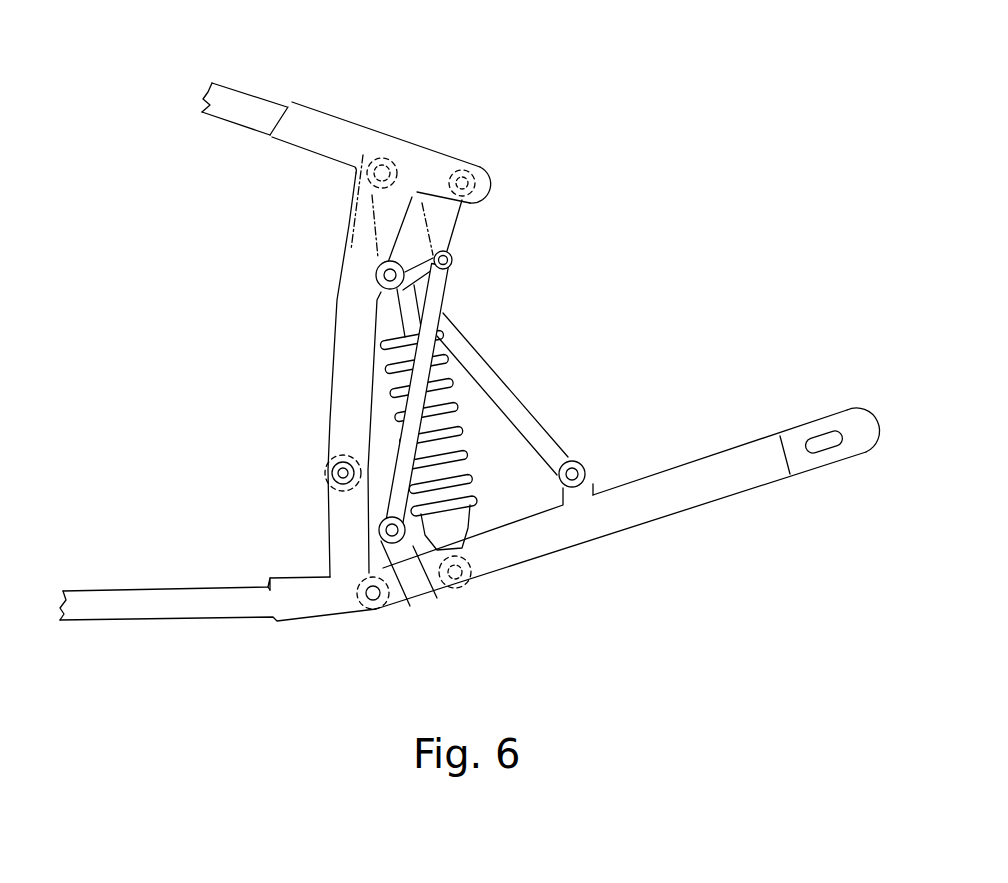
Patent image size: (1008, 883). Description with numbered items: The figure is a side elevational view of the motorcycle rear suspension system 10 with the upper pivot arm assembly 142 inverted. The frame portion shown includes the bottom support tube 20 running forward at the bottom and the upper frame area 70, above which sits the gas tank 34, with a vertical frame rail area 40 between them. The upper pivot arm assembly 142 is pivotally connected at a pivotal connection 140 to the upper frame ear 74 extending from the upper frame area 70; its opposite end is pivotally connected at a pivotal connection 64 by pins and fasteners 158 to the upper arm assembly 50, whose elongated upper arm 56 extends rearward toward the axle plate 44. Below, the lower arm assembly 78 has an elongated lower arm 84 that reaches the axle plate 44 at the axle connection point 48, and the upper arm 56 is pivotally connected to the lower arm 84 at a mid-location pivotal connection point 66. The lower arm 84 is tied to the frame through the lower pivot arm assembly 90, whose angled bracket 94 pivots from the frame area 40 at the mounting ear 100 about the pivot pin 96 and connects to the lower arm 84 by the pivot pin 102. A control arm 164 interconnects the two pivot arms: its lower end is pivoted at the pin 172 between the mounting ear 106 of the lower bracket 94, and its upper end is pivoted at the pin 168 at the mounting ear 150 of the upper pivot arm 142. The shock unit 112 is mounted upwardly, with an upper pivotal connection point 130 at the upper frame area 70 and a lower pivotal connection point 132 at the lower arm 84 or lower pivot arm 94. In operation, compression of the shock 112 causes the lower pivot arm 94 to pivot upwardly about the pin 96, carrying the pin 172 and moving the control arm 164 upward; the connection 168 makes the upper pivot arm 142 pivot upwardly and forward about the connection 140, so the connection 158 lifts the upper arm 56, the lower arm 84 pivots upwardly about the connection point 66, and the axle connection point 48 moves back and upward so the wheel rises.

The rear suspension system 10 is at (663, 631).
The bottom support tubes 20 is at (175, 607).
The gas tank 34 is at (247, 107).
The vertical frame rail 40 is at (348, 345).
The axle plate 44 is at (798, 465).
The axle connection point 48 is at (818, 436).
The upper arm assembly 50 is at (551, 398).
The upper arm 56 is at (520, 403).
The pivotal connection 64 is at (390, 276).
The pivotal connection point 66 is at (577, 471).
The upper frame area 70 is at (423, 157).
The upper frame ear 74 is at (462, 183).
The lower arm assembly 78 is at (760, 509).
The lower arm 84 is at (652, 507).
The lower pivot arm assembly 90 is at (258, 552).
The lower pivot arm bracket 94 is at (352, 530).
The pivot pin 96 is at (343, 473).
The mounting ear 100 is at (328, 460).
The pivot pin 102 is at (362, 604).
The mounting ear 106 is at (412, 605).
The shock unit 112 is at (460, 425).
The pivotal connection point 130 is at (381, 158).
The pivotal connection point 132 is at (462, 570).
The pivotal connection 140 is at (472, 183).
The upper pivot arm assembly 142 is at (450, 222).
The mounting ear 150 is at (452, 247).
The pin 158 is at (314, 266).
The control arm 164 is at (442, 292).
The pin 168 is at (457, 262).
The pin 172 is at (400, 538).